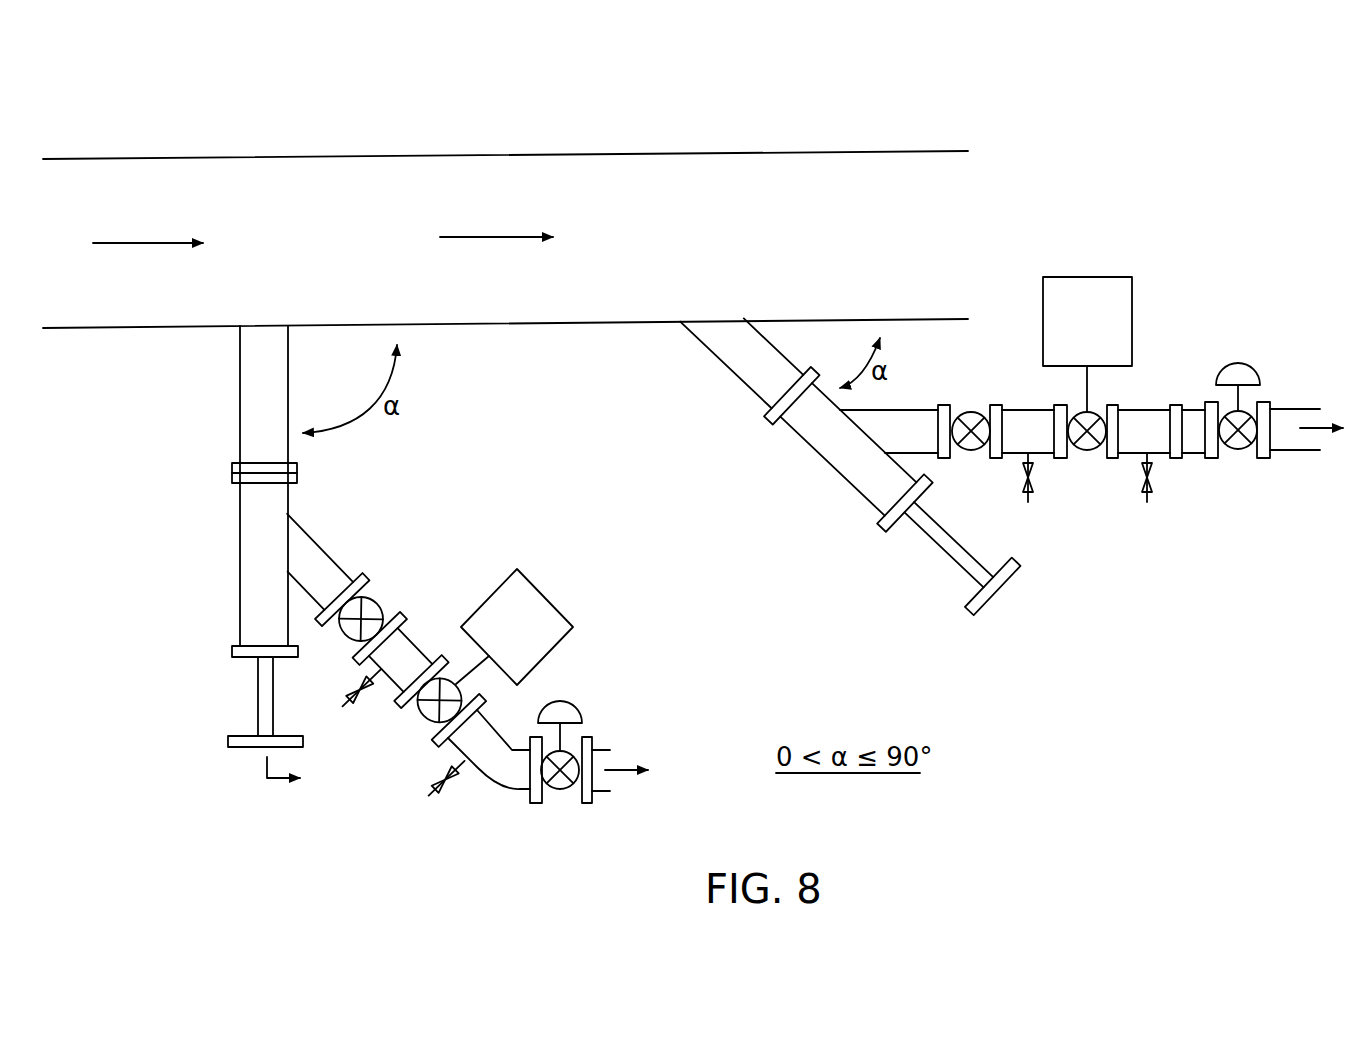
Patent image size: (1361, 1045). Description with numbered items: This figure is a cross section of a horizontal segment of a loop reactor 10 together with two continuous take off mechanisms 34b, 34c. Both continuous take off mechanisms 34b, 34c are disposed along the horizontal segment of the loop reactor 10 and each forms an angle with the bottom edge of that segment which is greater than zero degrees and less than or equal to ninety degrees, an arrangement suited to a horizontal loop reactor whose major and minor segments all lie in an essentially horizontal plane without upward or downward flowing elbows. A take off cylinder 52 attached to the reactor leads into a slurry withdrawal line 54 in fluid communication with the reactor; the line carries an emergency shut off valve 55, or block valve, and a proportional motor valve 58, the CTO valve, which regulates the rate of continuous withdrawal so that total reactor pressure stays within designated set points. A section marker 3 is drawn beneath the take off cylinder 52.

The loop reactor 10 is at (505, 222).
The take off cylinder 52 is at (287, 536).
The section view indicator 3 is at (283, 786).
The continuous take off mechanism 34b is at (336, 525).
The continuous take off mechanism 34c is at (800, 467).
The slurry withdrawal line 54 is at (391, 597).
The emergency shut off valve 55 is at (794, 481).
The proportional motor valve 58 is at (936, 565).